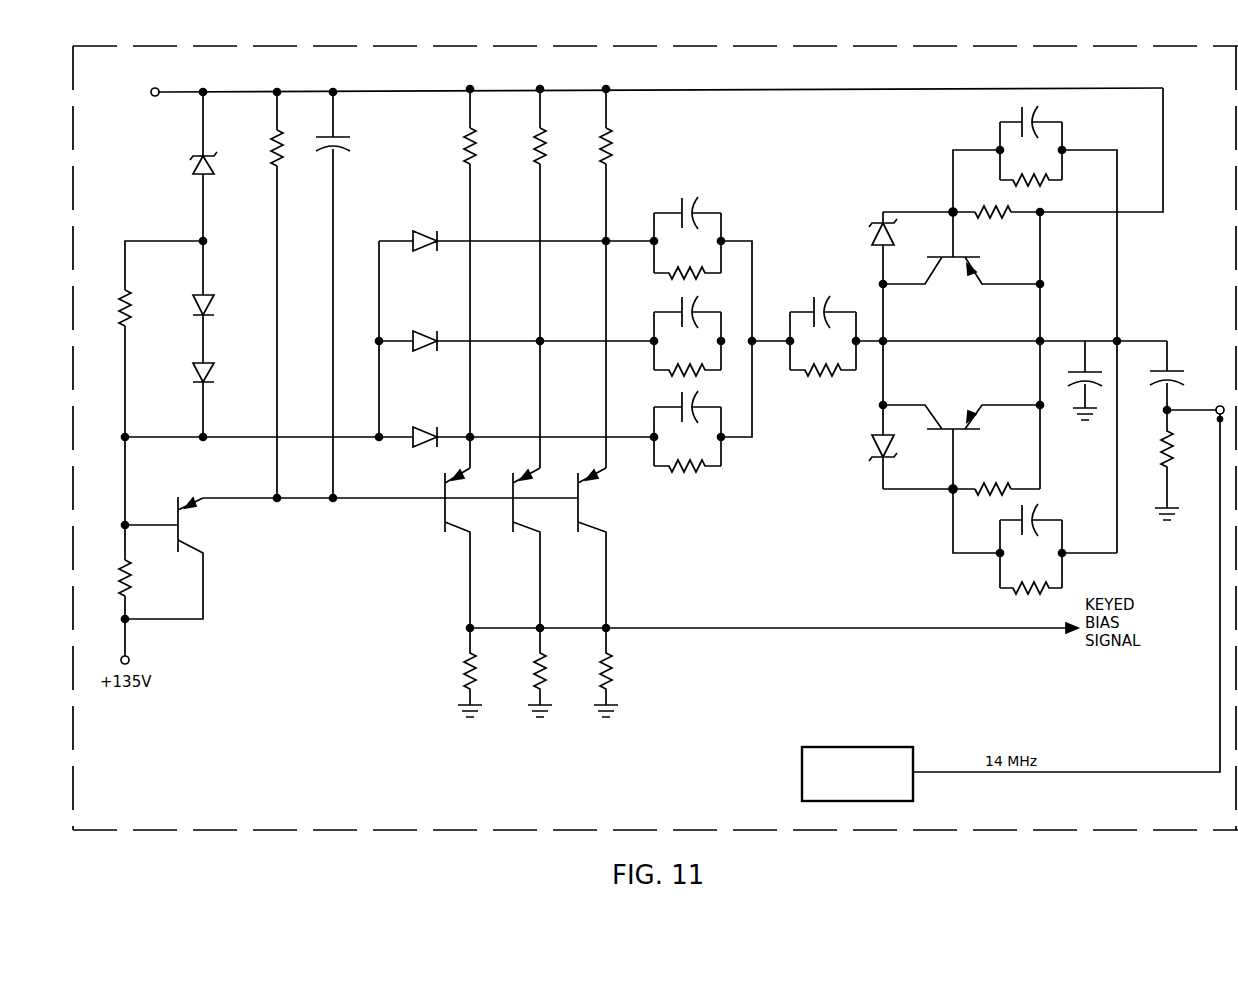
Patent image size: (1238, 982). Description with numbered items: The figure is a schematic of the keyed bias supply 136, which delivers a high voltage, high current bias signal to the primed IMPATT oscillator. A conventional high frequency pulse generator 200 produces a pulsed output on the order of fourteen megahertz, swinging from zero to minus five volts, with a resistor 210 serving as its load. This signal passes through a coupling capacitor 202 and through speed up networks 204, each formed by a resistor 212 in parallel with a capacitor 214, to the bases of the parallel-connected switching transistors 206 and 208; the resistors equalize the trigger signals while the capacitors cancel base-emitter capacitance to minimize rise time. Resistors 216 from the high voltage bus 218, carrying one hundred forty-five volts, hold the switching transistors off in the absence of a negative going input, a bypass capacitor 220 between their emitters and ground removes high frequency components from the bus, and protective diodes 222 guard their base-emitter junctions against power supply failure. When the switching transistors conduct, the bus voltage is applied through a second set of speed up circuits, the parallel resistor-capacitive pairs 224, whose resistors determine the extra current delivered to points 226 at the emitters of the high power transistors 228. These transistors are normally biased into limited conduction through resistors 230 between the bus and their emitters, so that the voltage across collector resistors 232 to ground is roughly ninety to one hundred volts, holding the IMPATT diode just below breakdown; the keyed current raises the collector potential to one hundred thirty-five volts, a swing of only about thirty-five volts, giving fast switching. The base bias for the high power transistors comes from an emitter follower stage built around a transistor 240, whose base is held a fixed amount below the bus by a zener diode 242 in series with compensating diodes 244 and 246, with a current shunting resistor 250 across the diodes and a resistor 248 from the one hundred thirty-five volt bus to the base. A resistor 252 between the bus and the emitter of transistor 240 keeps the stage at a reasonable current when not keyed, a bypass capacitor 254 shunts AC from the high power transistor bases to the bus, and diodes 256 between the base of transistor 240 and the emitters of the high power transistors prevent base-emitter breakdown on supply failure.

The keyed bias supply 136 is at (624, 829).
The high frequency pulse generator 200 is at (916, 797).
The coupling capacitor 202 is at (1178, 368).
The speed up network 204 is at (1038, 353).
The switching transistor 206 is at (935, 297).
The switching transistor 208 is at (980, 404).
The resistor 210 is at (1179, 437).
The resistor 212 is at (1067, 178).
The capacitor 214 is at (1020, 114).
The resistor 216 is at (995, 221).
The high voltage bus 218 is at (796, 83).
The bypass capacitor 220 is at (1098, 362).
The protective diode 222 is at (860, 244).
The resistor-capacitive pair 224 is at (730, 230).
The point 226 is at (604, 239).
The high power transistor 228 is at (436, 509).
The resistor 230 is at (483, 150).
The resistor 232 is at (462, 654).
The transistor 240 is at (196, 549).
The zener diode 242 is at (192, 166).
The compensating diode 244 is at (214, 304).
The compensating diode 246 is at (214, 386).
The resistor 248 is at (131, 572).
The current shunting resistor 250 is at (131, 317).
The resistor 252 is at (284, 150).
The bypass capacitor 254 is at (343, 134).
The diode 256 is at (417, 230).